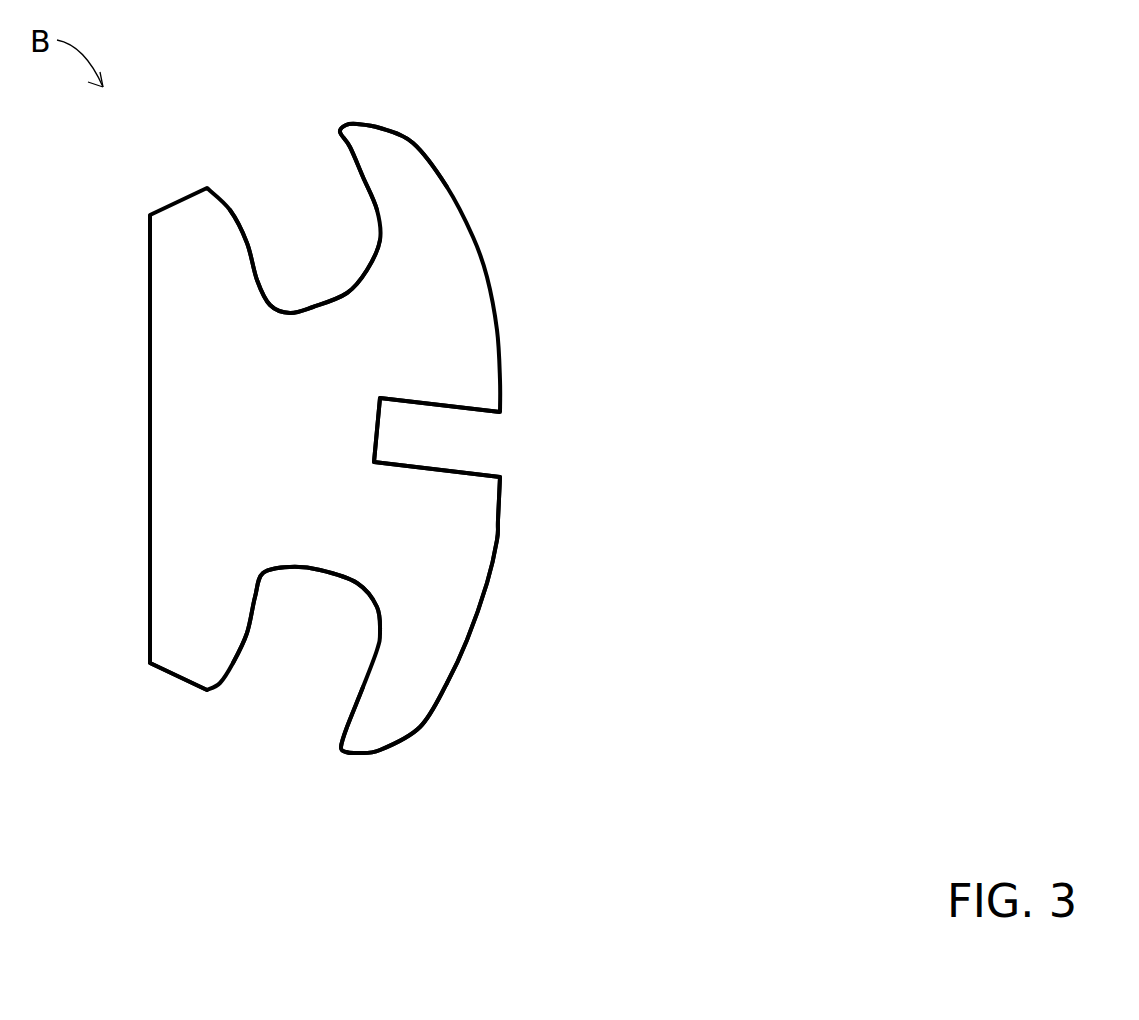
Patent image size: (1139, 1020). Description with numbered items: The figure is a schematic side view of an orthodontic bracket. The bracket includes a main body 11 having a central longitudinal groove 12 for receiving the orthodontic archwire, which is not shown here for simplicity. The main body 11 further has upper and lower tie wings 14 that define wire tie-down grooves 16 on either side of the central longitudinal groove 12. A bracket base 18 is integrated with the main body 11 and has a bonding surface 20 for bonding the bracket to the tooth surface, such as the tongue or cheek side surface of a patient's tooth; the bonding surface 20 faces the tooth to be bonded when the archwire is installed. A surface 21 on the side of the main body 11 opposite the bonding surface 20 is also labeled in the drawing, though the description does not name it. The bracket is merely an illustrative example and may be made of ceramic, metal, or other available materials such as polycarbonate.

The main body 11 is at (430, 318).
The central longitudinal groove 12 is at (457, 438).
The tie wings 14 is at (400, 167).
The wire tie-down grooves 16 is at (334, 255).
The bracket base 18 is at (198, 637).
The bonding surface 20 is at (148, 442).
The arcuate surface 21 is at (497, 557).